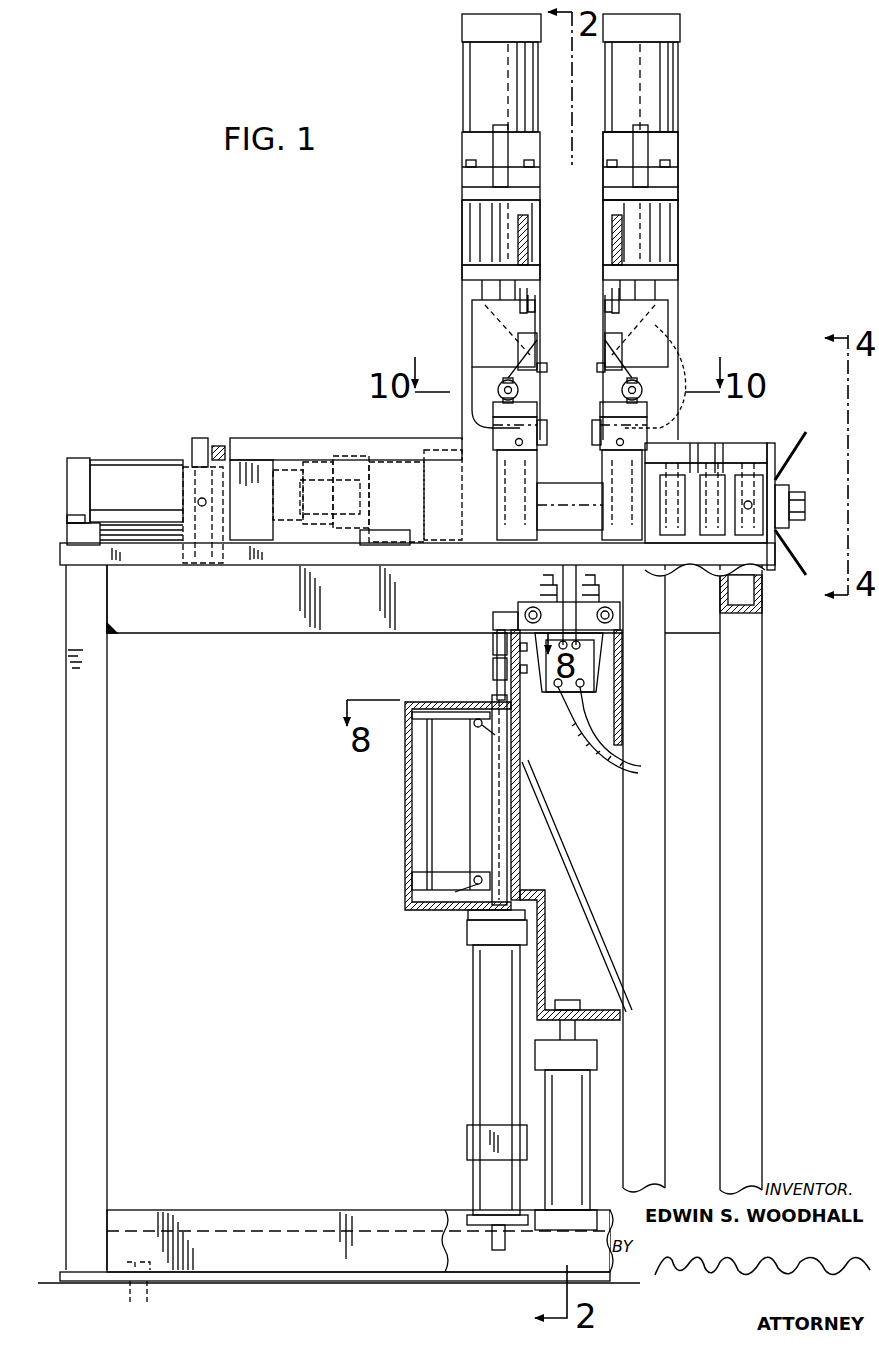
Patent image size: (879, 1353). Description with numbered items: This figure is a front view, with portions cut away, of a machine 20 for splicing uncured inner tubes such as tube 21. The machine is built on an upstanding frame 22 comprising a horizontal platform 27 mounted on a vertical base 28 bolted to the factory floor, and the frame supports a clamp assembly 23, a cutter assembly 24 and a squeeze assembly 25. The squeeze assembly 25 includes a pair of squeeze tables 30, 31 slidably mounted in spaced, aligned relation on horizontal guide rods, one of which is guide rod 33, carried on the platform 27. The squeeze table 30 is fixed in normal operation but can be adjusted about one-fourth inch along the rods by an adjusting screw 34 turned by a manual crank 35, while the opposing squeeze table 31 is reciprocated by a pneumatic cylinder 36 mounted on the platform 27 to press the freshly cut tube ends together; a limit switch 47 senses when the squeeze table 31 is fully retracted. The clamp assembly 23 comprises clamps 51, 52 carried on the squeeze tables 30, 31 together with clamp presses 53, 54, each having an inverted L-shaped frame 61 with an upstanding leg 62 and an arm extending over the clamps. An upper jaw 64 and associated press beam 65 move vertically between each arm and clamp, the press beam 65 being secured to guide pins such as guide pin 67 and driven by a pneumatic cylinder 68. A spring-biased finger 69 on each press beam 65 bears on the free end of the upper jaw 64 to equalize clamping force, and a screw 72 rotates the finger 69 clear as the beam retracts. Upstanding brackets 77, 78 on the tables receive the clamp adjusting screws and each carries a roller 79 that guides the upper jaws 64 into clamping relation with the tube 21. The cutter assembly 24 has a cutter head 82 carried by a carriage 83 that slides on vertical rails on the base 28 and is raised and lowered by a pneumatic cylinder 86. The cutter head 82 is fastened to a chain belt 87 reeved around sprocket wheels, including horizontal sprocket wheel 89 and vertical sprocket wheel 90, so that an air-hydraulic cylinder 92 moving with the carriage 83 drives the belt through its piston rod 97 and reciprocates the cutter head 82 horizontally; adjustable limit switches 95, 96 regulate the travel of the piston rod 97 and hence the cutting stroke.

The machine 20 is at (682, 276).
The tube 21 is at (672, 386).
The frame 22 is at (764, 758).
The clamp assembly 23 is at (462, 268).
The cutter assembly 24 is at (612, 688).
The squeeze assembly 25 is at (345, 465).
The platform 27 is at (150, 565).
The base 28 is at (107, 750).
The squeeze table 30 is at (750, 443).
The squeeze table 31 is at (365, 438).
The guide rod 33 is at (548, 483).
The adjusting screw 34 is at (805, 497).
The crank 35 is at (805, 443).
The pneumatic cylinder 36 is at (140, 460).
The limit switch 47 is at (208, 442).
The clamp 51 is at (588, 434).
The clamp 52 is at (528, 425).
The clamp press 53 is at (680, 163).
The clamp press 54 is at (462, 146).
The inverted L-shaped frame 61 is at (466, 56).
The upstanding leg 62 is at (462, 215).
The upper jaw 64 is at (535, 357).
The press beam 65 is at (490, 302).
The guide pin 67 is at (500, 130).
The pneumatic cylinder 68 is at (462, 24).
The finger 69 is at (612, 325).
The screw 72 is at (612, 244).
The bracket 77 is at (650, 436).
The bracket 78 is at (472, 436).
The roller 79 is at (506, 380).
The cutter head 82 is at (600, 650).
The carriage 83 is at (600, 1008).
The pneumatic cylinder 86 is at (608, 1116).
The chain belt 87 is at (490, 653).
The sprocket wheel 89 is at (493, 616).
The sprocket wheel 90 is at (492, 678).
The air-hydraulic cylinder 92 is at (473, 1025).
The limit switch 95 is at (475, 892).
The limit switch 96 is at (478, 728).
The piston rod 97 is at (492, 800).